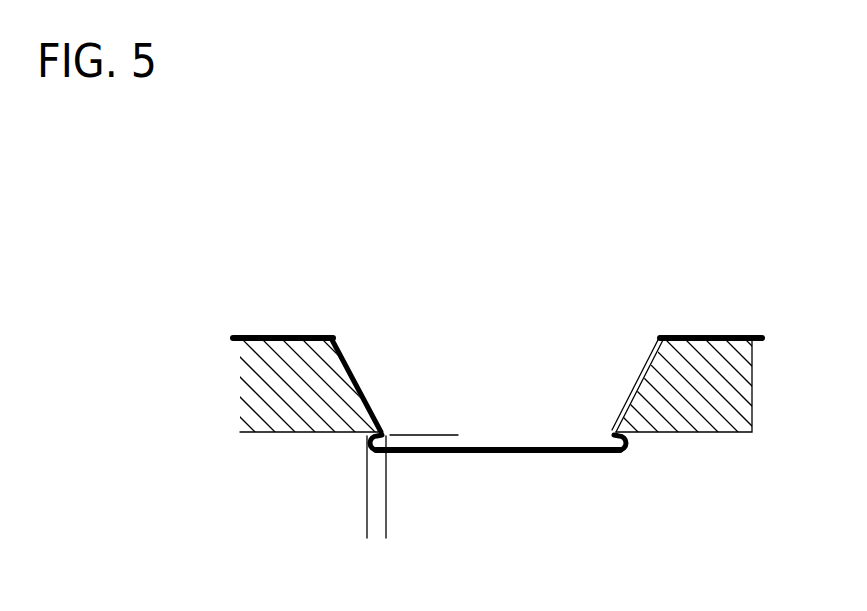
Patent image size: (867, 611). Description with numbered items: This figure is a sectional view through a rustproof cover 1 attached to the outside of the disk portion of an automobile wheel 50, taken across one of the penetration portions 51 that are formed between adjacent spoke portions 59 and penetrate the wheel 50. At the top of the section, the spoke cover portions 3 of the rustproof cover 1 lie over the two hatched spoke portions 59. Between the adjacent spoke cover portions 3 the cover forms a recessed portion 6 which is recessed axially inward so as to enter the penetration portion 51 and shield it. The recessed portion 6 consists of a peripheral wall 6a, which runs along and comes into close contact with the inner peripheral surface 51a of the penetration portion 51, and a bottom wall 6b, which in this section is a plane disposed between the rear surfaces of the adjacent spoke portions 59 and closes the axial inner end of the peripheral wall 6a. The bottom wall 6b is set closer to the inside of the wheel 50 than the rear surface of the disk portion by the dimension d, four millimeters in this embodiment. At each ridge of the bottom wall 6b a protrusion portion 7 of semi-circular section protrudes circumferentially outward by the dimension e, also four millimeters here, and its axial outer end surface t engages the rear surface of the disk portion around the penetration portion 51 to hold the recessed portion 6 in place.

The rustproof cover 1 is at (718, 276).
The spoke cover portion 3 is at (258, 336).
The spoke portion 59 is at (297, 336).
The penetration portion 51 is at (403, 364).
The inner peripheral surface 51a is at (370, 370).
The recessed portion 6 is at (482, 419).
The peripheral wall 6a is at (622, 378).
The bottom wall 6b is at (535, 456).
The protrusion portion 7 is at (366, 447).
The wheel 50 is at (720, 480).
The axial outer end surface t is at (363, 428).
The dimension e is at (417, 526).
The dimension d is at (448, 408).